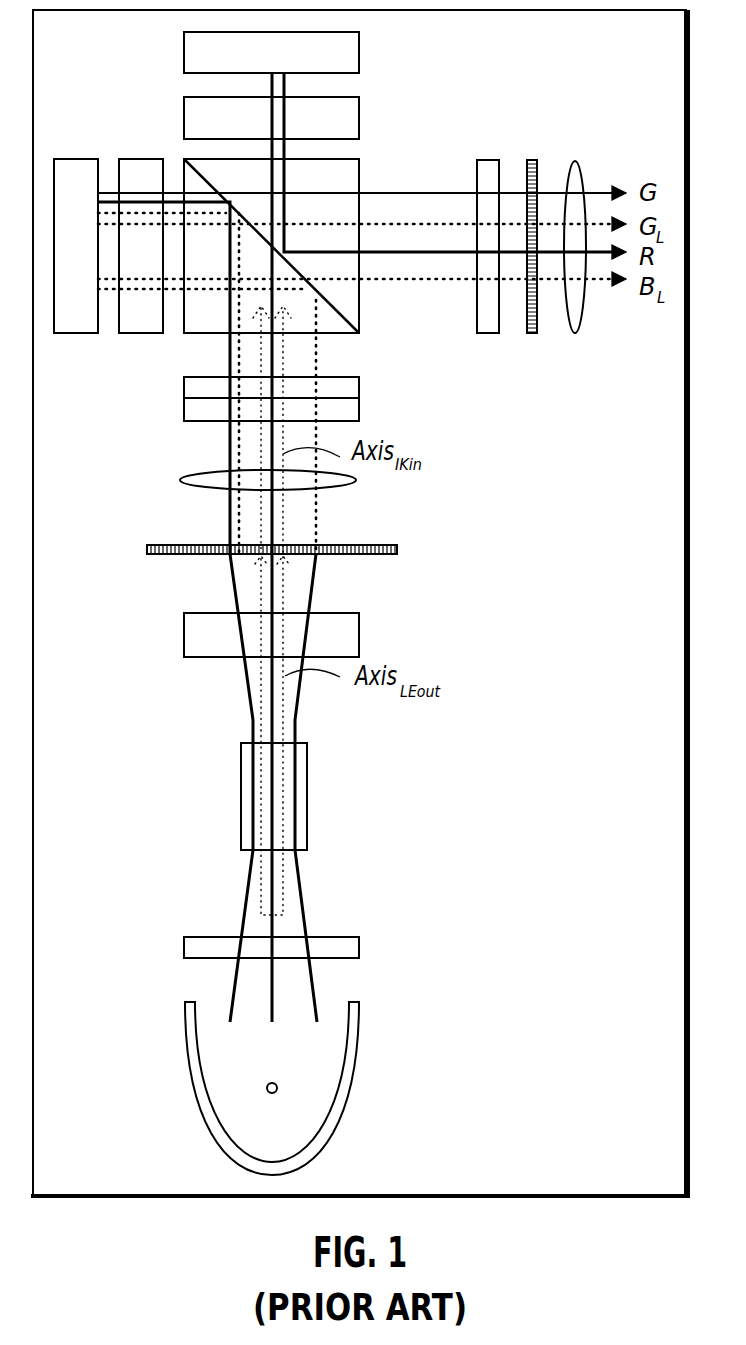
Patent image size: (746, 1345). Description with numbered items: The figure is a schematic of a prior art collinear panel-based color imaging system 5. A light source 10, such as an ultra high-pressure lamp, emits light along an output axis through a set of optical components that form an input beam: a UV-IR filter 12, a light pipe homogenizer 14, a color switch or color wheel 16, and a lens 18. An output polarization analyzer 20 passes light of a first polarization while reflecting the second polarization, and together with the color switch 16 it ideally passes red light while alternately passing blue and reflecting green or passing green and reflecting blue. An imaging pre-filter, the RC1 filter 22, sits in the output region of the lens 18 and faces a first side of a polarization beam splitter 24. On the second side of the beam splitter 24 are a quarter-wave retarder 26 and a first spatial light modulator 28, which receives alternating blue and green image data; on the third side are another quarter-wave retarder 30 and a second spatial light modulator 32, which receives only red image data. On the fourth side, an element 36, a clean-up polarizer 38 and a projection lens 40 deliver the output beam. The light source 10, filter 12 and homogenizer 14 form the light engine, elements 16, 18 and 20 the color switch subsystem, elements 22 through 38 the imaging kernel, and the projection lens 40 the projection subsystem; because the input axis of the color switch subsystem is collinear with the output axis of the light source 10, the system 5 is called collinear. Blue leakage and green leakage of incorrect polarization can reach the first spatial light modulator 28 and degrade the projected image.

The color imaging system 5 is at (68, 1199).
The light source 10 is at (187, 1042).
The UV-IR filter 12 is at (184, 940).
The light pipe homogenizer 14 is at (241, 795).
The color switch 16 is at (184, 633).
The lens 18 is at (181, 478).
The output polarization analyzer 20 is at (147, 547).
The RC1 filter 22 is at (184, 392).
The polarization beam splitter 24 is at (359, 333).
The quarter-wave retarder 26 is at (144, 159).
The first spatial light modulator 28 is at (78, 159).
The quarter-wave retarder 30 is at (359, 113).
The second spatial light modulator 32 is at (359, 48).
The polarizer / plate 36 is at (486, 160).
The clean-up polarizer 38 is at (531, 333).
The projection lens 40 is at (575, 161).